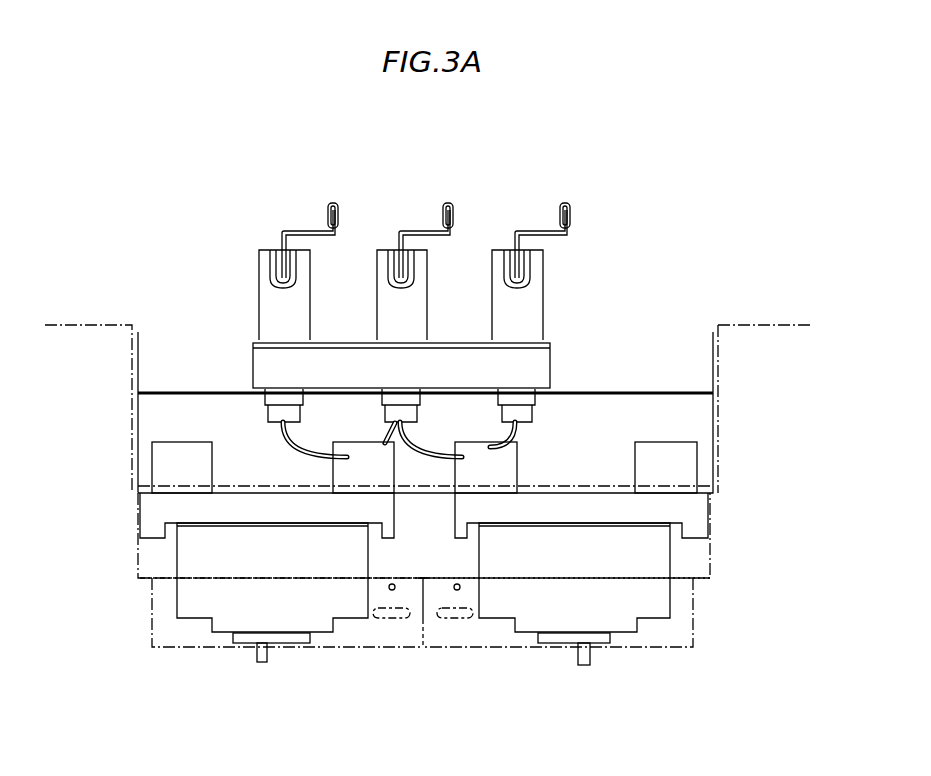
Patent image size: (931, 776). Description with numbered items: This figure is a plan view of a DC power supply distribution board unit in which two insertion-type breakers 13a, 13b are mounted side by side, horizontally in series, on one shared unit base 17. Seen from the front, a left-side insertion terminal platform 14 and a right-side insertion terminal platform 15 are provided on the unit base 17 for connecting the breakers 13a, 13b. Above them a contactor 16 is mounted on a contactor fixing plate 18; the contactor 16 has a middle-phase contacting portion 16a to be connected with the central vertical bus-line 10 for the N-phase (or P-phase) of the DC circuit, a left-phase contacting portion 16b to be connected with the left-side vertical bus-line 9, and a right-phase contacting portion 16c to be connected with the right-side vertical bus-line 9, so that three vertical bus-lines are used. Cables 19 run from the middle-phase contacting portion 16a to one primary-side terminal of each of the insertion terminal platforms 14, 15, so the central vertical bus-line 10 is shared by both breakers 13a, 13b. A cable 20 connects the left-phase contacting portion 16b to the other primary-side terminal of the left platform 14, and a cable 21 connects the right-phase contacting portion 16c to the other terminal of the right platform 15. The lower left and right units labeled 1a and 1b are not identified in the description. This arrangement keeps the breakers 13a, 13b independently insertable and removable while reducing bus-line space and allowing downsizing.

The semiconductor module 1a is at (192, 647).
The semiconductor module 1b is at (657, 650).
The vertical bus-line 9 is at (334, 201).
The central vertical bus-line 10 is at (450, 201).
The insertion-type breaker 13a is at (262, 663).
The insertion-type breaker 13b is at (584, 666).
The insertion terminal platform 14 is at (150, 523).
The insertion terminal platform 15 is at (697, 518).
The contactor 16 is at (550, 357).
The middle-phase contacting portion 16a is at (428, 323).
The left-phase contacting portion 16b is at (312, 322).
The right-phase contacting portion 16c is at (545, 322).
The unit base 17 is at (718, 442).
The contactor fixing plate 18 is at (218, 392).
The cable 19 is at (419, 458).
The cable 20 is at (283, 440).
The cable 21 is at (525, 430).